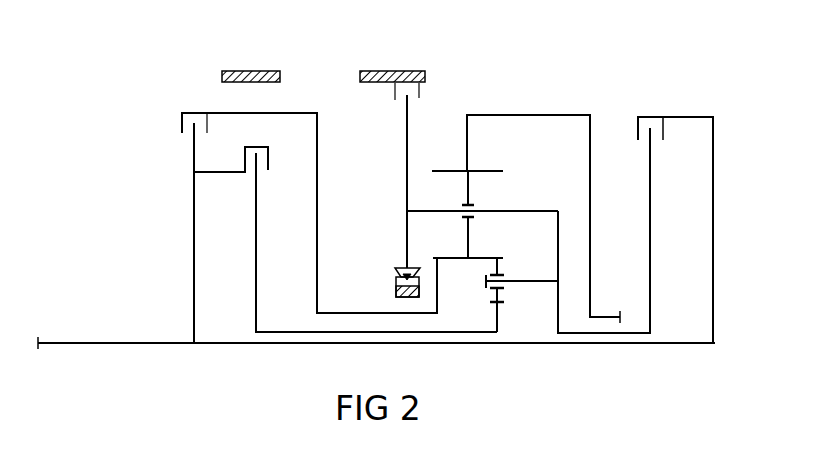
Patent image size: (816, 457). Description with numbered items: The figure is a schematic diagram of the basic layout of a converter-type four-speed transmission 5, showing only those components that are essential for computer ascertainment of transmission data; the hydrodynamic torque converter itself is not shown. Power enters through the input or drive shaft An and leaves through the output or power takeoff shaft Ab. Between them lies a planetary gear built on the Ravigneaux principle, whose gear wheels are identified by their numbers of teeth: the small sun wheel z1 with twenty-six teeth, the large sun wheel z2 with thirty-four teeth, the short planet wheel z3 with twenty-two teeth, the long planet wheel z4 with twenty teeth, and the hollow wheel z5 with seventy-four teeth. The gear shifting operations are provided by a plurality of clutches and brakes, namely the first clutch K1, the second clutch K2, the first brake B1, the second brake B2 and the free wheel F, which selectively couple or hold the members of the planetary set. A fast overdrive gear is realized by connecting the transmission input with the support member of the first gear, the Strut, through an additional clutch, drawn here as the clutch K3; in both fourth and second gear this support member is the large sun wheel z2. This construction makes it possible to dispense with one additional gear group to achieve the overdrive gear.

The four-speed transmission 5 is at (491, 77).
The first clutch K1 is at (345, 239).
The second clutch K2 is at (291, 228).
The third clutch K3 is at (635, 216).
The first brake B1 is at (251, 62).
The second brake B2 is at (392, 155).
The free wheel F is at (393, 282).
The small sun wheel z1 is at (509, 317).
The large sun wheel z2 is at (448, 285).
The short planet wheel z3 is at (522, 280).
The long planet wheel z4 is at (468, 246).
The hollow wheel z5 is at (526, 216).
The support member of the first gear Strut is at (482, 220).
The input or drive shaft An is at (376, 332).
The output or power takeoff shaft Ab is at (608, 307).